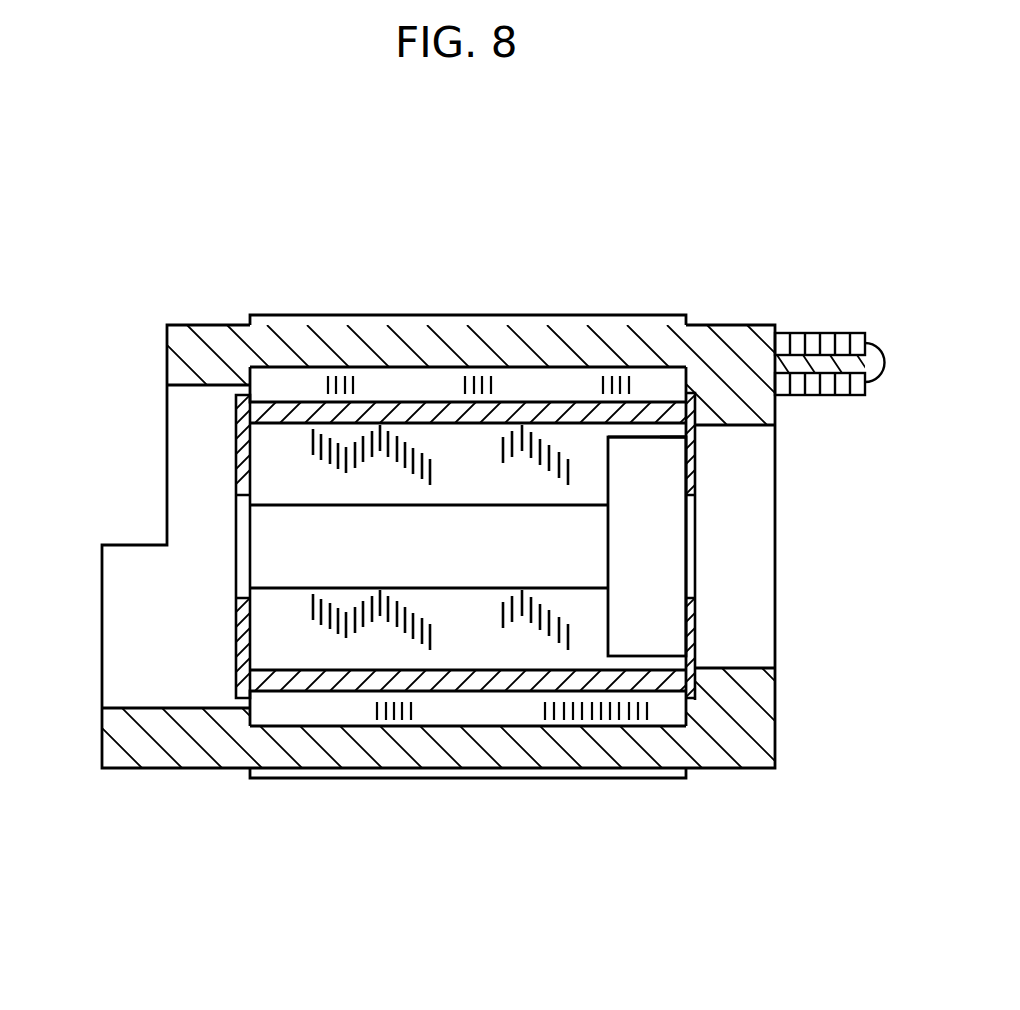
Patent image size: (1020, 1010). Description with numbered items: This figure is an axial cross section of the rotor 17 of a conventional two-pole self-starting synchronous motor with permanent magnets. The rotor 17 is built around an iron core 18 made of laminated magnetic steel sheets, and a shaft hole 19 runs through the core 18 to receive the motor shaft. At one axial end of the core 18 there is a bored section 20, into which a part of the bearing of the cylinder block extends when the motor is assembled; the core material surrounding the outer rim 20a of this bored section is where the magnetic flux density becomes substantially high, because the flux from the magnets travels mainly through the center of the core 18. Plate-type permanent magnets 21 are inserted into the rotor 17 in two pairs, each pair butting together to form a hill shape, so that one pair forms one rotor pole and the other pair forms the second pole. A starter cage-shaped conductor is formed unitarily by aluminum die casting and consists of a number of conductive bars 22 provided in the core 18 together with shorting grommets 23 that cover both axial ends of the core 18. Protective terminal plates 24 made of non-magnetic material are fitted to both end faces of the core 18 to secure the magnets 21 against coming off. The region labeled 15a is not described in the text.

The rotor end gap 15a is at (667, 430).
The rotor 17 is at (413, 316).
The iron core 18 is at (587, 655).
The shaft hole 19 is at (468, 590).
The bored section 20 is at (652, 635).
The outer rim of bored section 20a is at (643, 438).
The permanent magnet 21 is at (390, 412).
The conductive bar 22 is at (480, 350).
The shorting grommet 23 is at (220, 345).
The protective terminal plate 24 is at (235, 454).